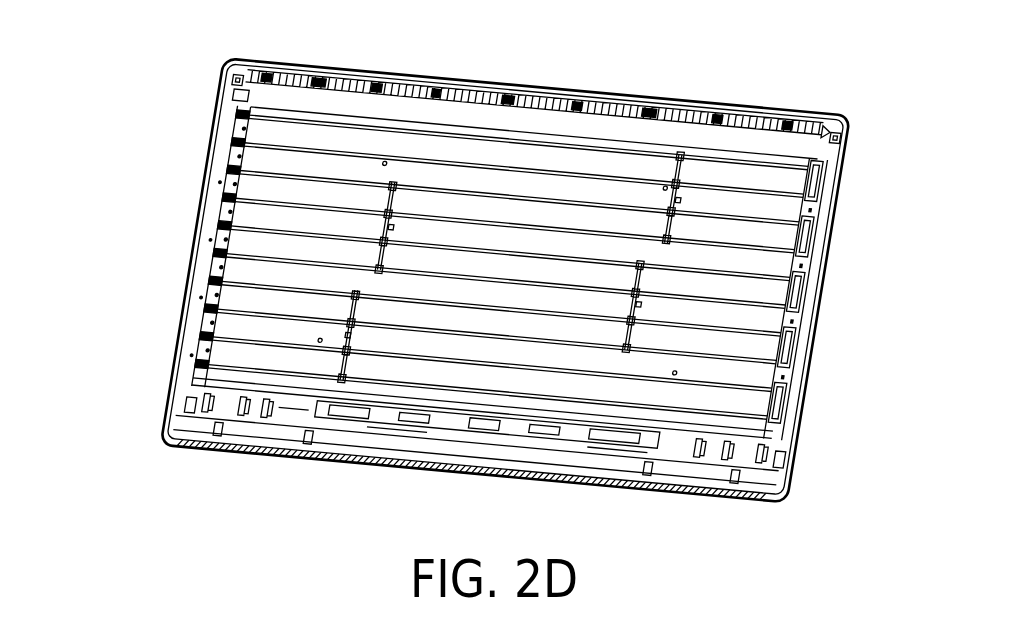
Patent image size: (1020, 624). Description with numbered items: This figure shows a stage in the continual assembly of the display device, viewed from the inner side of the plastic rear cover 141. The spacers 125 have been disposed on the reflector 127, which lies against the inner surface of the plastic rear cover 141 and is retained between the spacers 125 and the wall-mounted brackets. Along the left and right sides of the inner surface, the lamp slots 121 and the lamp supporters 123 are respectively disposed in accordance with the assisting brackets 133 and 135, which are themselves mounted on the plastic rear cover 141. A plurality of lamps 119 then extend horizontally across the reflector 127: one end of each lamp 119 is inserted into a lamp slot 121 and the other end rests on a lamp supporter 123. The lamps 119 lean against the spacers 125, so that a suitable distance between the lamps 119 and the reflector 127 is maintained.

The lamps 119 is at (413, 130).
The lamp slots 121 is at (243, 108).
The lamp supporters 123 is at (838, 186).
The spacers 125 is at (393, 197).
The reflector 127 is at (365, 107).
The assisting bracket 133 is at (240, 132).
The assisting bracket 135 is at (826, 153).
The plastic rear cover 141 is at (745, 110).